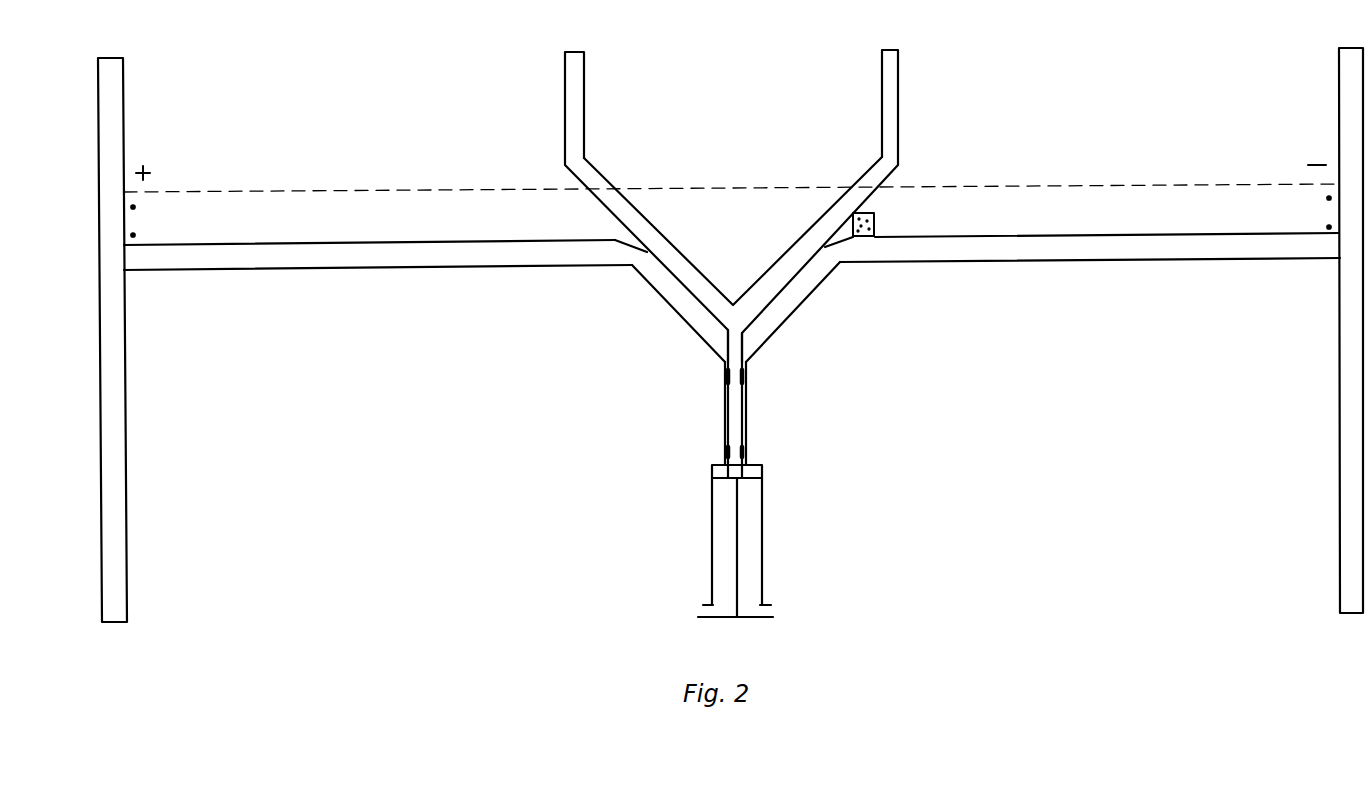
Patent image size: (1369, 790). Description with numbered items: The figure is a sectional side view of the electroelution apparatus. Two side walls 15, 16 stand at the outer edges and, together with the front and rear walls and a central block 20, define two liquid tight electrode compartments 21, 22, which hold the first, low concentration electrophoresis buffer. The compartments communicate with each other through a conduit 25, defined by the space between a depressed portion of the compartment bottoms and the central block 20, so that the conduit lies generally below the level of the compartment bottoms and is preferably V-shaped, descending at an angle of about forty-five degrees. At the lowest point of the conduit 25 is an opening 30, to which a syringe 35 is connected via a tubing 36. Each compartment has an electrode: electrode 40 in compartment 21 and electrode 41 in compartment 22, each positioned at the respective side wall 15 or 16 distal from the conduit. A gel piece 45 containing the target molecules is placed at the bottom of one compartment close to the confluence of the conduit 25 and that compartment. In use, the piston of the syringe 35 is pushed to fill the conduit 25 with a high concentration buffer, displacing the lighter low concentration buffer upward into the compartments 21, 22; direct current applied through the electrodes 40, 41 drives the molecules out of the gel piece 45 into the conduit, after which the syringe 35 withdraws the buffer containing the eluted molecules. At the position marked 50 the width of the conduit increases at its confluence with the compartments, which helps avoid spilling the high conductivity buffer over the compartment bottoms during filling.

The side wall 15 is at (112, 100).
The side wall 16 is at (1350, 105).
The central block 20 is at (731, 264).
The electrode compartment 21 is at (378, 239).
The electrode compartment 22 is at (1090, 233).
The conduit 25 is at (750, 327).
The opening 30 is at (742, 368).
The syringe 35 is at (762, 553).
The tubing 36 is at (725, 418).
The electrode 40 is at (133, 235).
The electrode 41 is at (1329, 227).
The gel piece 45 is at (875, 220).
The position of increased conduit width 50 is at (643, 253).